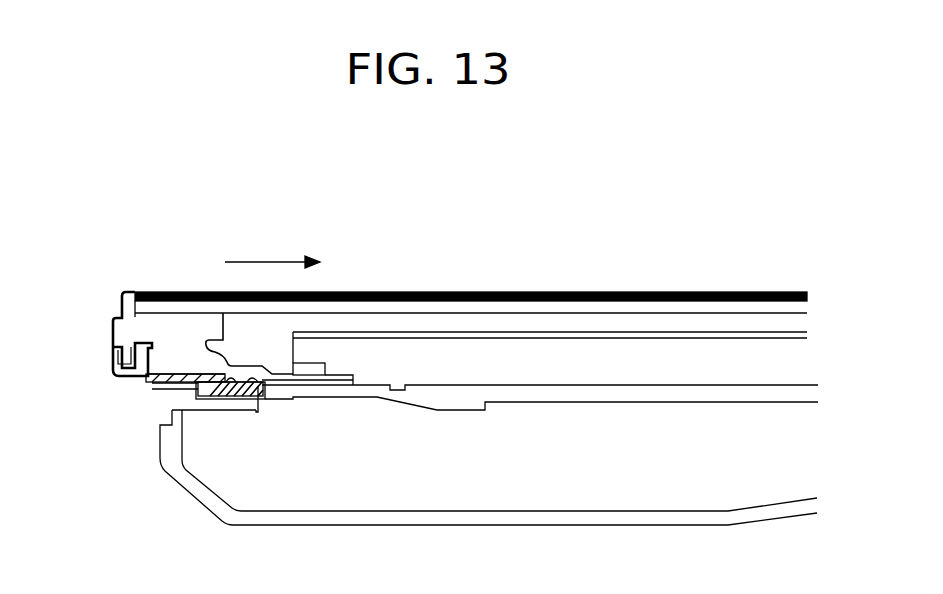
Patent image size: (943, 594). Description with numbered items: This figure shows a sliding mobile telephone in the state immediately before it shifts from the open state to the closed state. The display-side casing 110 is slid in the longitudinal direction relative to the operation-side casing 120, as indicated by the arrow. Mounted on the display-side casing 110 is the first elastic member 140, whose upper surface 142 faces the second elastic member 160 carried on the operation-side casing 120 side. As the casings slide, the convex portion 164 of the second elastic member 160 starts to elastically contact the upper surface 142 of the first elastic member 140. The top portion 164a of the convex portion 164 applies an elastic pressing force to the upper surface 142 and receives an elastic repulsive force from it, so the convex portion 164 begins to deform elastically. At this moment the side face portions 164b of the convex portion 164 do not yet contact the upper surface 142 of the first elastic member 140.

The display-side casing 110 is at (122, 324).
The operation-side casing 120 is at (196, 495).
The first elastic member 140 is at (118, 371).
The upper surface 142 is at (153, 382).
The second elastic member 160 is at (172, 390).
The convex portion 164 is at (226, 387).
The top portion 164a is at (160, 449).
The side face portions 164b is at (258, 387).